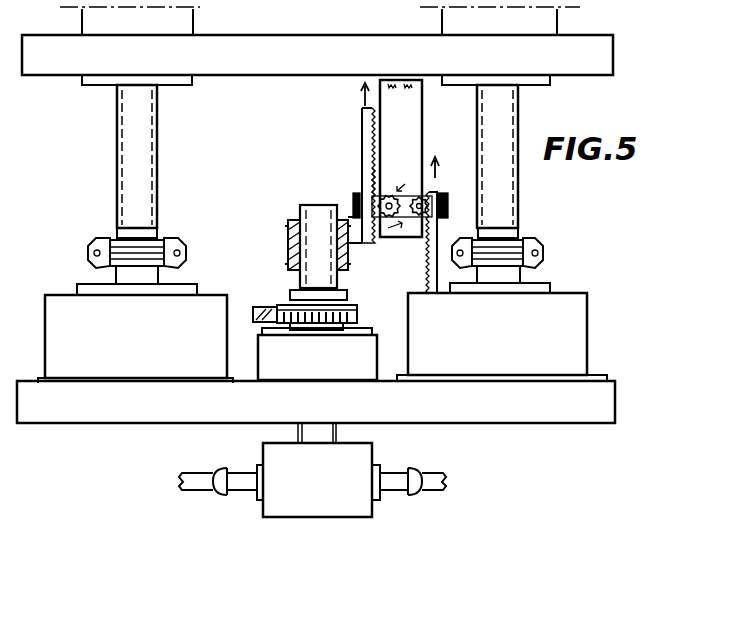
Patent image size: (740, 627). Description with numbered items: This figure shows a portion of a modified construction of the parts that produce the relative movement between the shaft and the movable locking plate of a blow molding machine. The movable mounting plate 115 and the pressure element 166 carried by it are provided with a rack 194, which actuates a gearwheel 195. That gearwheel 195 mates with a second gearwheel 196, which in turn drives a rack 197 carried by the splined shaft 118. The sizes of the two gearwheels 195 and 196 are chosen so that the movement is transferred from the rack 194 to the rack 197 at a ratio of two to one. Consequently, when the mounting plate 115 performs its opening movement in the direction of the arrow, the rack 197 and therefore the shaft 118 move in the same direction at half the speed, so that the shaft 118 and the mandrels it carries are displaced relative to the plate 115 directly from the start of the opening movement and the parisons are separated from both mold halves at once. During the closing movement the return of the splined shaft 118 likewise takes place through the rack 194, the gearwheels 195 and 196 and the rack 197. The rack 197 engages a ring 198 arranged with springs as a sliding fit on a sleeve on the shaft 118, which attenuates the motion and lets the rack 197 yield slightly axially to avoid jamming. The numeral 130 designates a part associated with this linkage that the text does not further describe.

The movable mounting plate 115 is at (392, 390).
The splined shaft 118 is at (318, 208).
The coupling link 130 is at (399, 259).
The pressure element 166 is at (410, 308).
The rack 194 is at (443, 268).
The gearwheel 195 is at (432, 198).
The gearwheel 196 is at (392, 190).
The rack 197 is at (361, 155).
The ring 198 is at (288, 245).